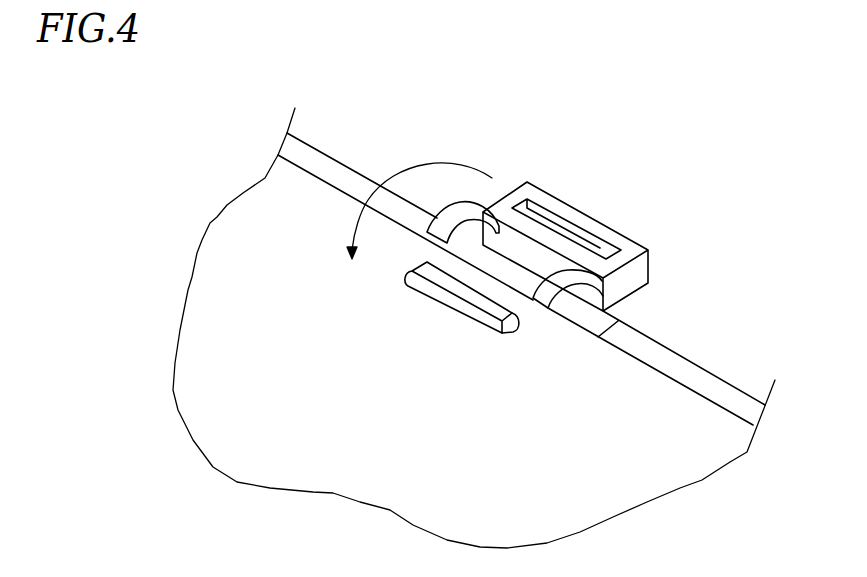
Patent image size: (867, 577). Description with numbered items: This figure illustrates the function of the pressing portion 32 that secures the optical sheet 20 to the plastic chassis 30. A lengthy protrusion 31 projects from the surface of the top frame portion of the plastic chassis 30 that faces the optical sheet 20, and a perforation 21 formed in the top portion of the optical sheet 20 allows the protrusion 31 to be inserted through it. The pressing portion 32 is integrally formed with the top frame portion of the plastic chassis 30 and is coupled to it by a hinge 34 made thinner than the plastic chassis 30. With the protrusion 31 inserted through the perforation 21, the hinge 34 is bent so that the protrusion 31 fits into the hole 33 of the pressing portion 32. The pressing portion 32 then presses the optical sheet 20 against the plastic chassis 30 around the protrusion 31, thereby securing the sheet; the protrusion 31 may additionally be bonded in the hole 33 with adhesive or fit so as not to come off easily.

The optical sheet 20 is at (670, 395).
The perforation 21 is at (520, 318).
The plastic chassis 30 is at (353, 183).
The protrusion 31 is at (452, 309).
The pressing portion 32 is at (631, 253).
The hole 33 is at (584, 242).
The hinge 34 is at (477, 213).